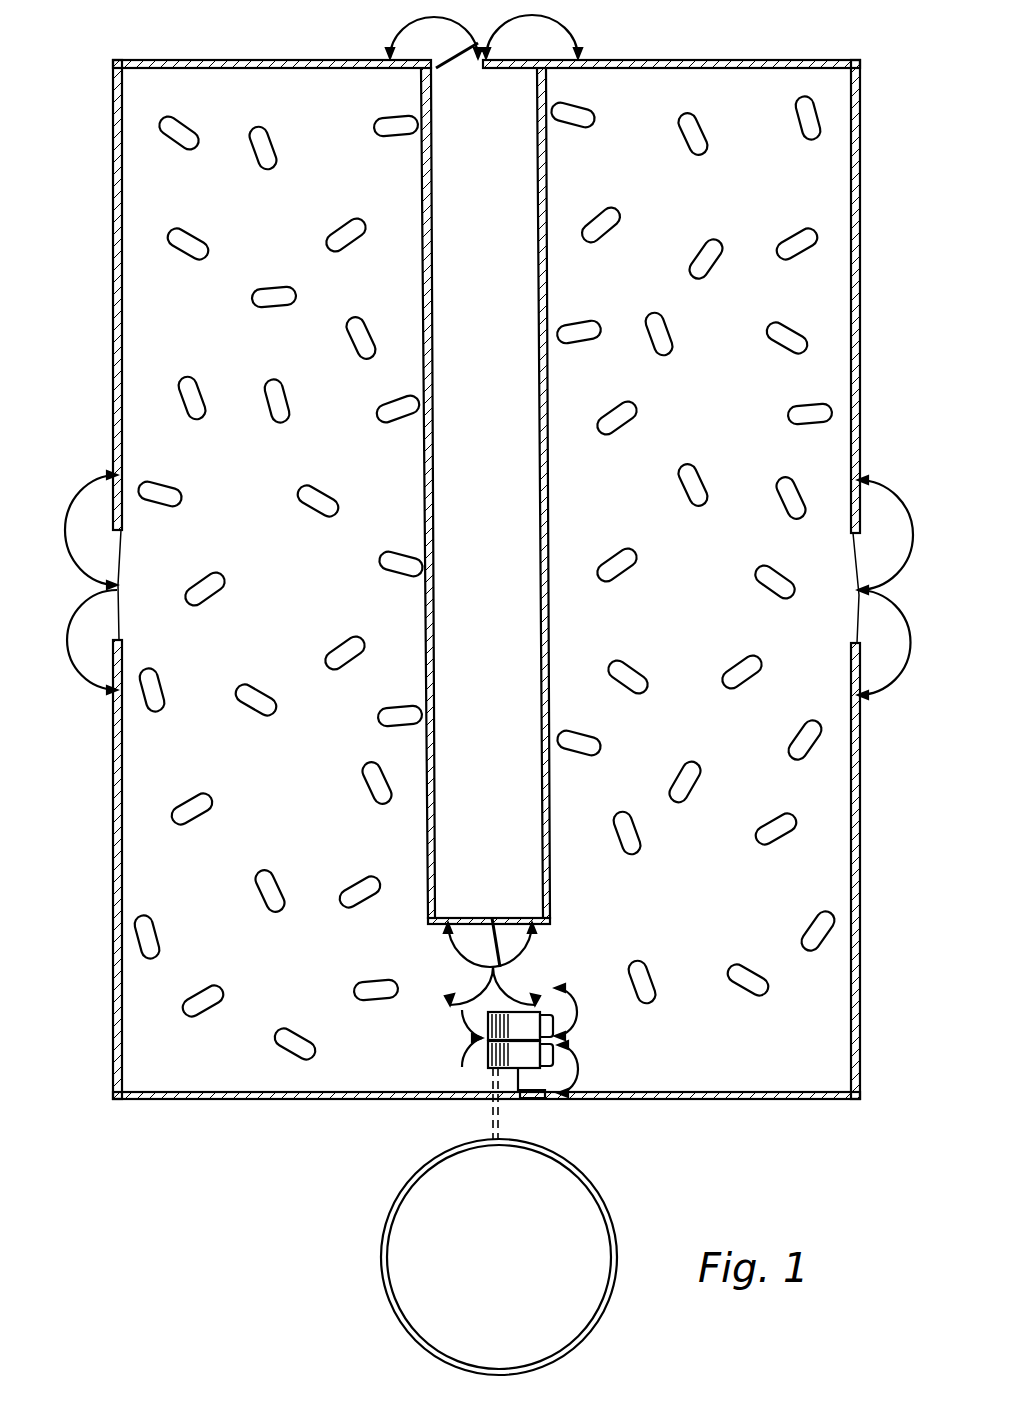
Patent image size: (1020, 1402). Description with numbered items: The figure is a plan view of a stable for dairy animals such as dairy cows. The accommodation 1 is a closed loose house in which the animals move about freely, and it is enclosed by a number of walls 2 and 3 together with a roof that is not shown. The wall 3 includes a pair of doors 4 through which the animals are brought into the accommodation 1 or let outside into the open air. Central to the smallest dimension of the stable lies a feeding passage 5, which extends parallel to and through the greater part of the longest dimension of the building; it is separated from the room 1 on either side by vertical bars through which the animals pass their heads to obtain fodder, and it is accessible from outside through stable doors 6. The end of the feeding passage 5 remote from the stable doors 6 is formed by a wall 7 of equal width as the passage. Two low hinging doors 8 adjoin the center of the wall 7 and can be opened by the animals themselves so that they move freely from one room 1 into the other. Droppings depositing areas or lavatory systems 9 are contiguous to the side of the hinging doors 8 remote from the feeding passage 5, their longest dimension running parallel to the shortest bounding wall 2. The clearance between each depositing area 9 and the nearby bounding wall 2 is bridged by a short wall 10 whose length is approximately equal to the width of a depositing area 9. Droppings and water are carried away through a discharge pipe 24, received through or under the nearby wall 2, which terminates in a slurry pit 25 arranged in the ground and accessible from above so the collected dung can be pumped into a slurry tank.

The accommodation 1 is at (296, 599).
The wall 2 is at (297, 68).
The wall 3 is at (855, 377).
The doors 4 is at (857, 603).
The feeding passage 5 is at (497, 569).
The stable doors 6 is at (452, 70).
The wall 7 is at (464, 918).
The hinging doors 8 is at (492, 938).
The depositing areas 9 is at (543, 995).
The short wall 10 is at (530, 1098).
The discharge pipe 24 is at (490, 1118).
The slurry pit 25 is at (516, 1244).